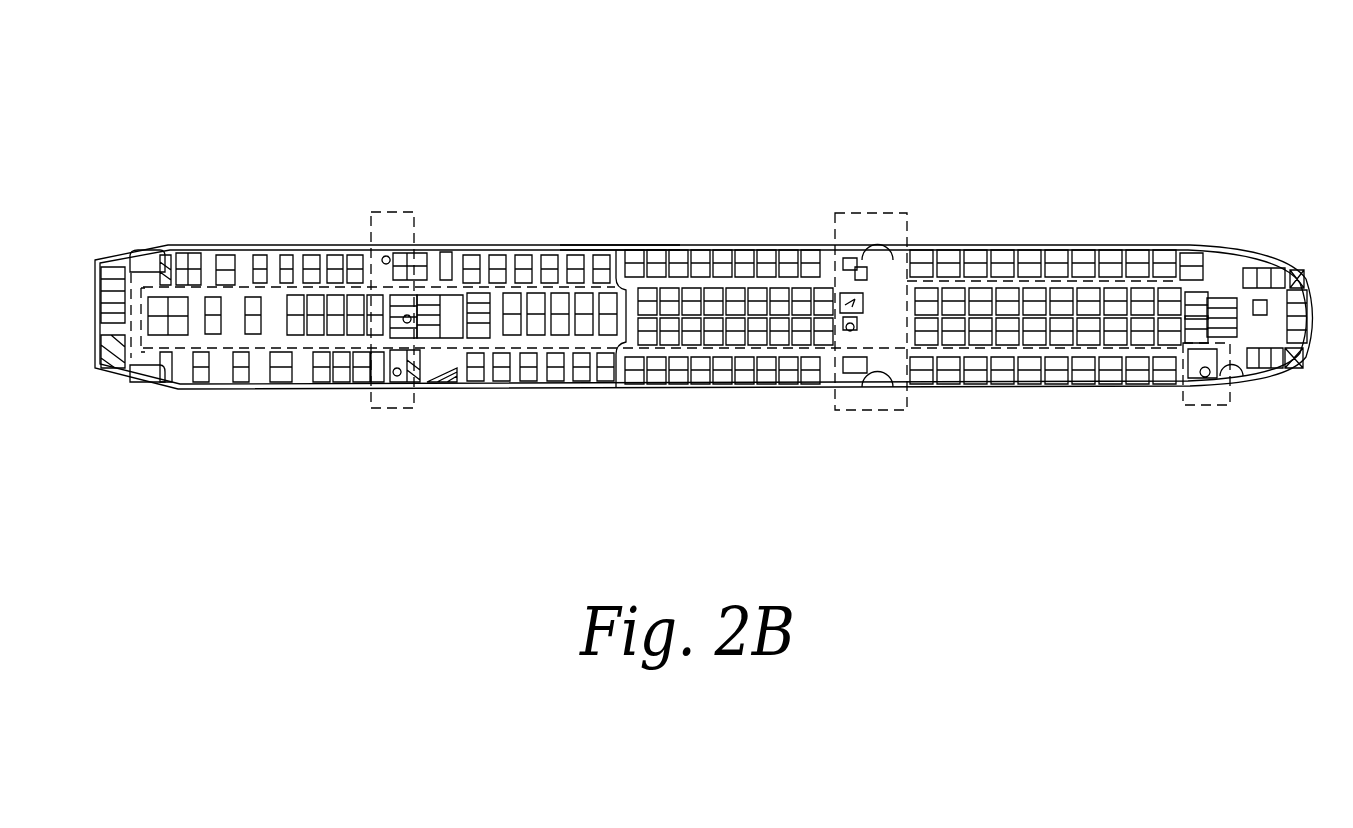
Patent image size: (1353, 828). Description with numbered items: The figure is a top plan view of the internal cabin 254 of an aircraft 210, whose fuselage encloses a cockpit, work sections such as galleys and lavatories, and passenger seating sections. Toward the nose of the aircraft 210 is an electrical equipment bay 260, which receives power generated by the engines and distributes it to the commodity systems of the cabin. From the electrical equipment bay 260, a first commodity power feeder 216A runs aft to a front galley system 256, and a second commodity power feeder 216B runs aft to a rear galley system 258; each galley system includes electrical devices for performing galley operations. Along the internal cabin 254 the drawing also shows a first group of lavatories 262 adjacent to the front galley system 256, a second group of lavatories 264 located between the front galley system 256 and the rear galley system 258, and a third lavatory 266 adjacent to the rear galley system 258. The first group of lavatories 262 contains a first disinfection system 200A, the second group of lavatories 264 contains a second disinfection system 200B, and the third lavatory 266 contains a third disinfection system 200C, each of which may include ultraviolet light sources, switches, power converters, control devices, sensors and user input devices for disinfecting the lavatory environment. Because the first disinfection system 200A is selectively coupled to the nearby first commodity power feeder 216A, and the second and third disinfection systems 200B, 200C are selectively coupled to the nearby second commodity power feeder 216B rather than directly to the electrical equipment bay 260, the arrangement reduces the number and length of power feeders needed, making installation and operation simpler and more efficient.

The aircraft 210 is at (230, 118).
The internal cabin 254 is at (620, 245).
The front galley system 256 is at (443, 272).
The rear galley system 258 is at (1240, 270).
The electrical equipment bay 260 is at (131, 345).
The first group of lavatories 262 is at (407, 315).
The second group of lavatories 264 is at (847, 257).
The third lavatory 266 is at (1205, 372).
The first disinfection system 200A is at (375, 410).
The second disinfection system 200B is at (890, 412).
The third disinfection system 200C is at (1196, 405).
The first commodity power feeder 216A is at (210, 285).
The second commodity power feeder 216B is at (215, 355).